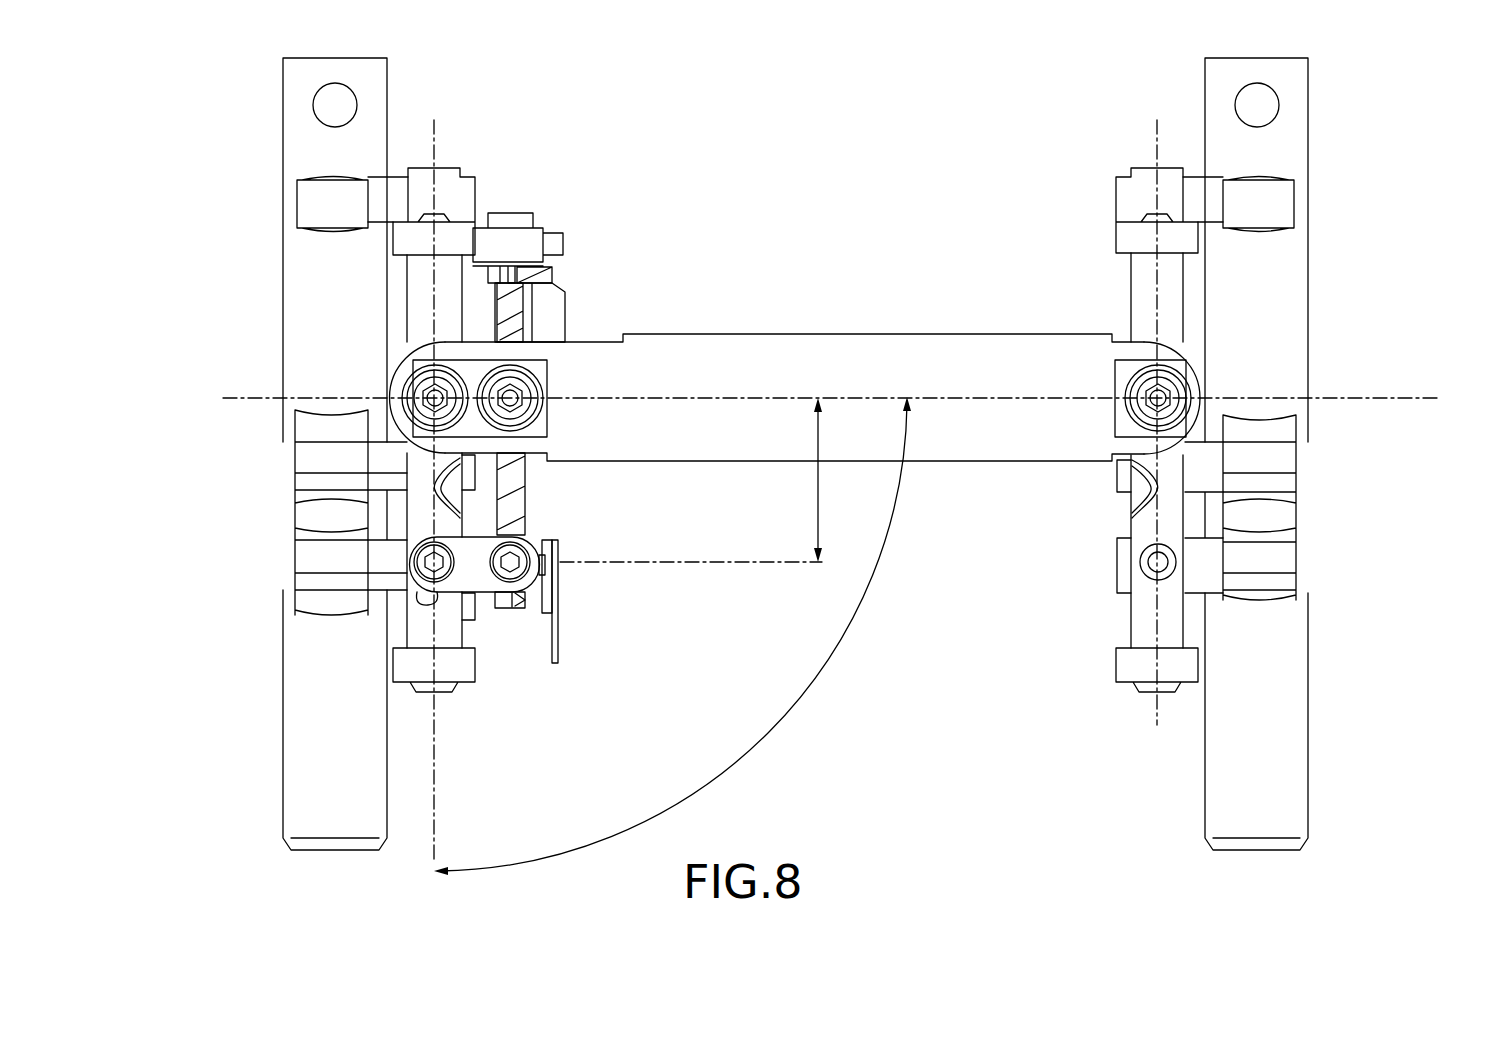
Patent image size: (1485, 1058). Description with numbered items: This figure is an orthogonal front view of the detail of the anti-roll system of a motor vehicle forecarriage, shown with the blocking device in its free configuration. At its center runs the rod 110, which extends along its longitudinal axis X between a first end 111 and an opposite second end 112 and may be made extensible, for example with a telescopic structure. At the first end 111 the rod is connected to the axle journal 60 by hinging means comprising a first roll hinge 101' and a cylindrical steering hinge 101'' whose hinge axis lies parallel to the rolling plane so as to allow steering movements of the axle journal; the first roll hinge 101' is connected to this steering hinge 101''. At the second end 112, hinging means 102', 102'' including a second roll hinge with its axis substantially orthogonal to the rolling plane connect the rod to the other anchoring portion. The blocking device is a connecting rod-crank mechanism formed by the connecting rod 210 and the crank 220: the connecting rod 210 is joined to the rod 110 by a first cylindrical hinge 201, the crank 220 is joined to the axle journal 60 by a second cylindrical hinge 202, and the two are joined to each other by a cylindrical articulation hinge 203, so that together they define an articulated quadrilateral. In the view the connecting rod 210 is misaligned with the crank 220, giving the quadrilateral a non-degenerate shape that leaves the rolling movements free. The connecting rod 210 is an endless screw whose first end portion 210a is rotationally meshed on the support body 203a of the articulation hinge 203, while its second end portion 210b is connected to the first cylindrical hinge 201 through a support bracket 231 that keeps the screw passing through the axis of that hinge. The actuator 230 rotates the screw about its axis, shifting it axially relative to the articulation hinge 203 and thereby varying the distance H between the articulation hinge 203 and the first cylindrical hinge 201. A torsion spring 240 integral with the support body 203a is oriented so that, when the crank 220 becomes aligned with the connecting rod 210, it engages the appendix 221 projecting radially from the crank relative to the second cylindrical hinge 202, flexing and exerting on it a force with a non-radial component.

The axle journal 60 is at (298, 640).
The first roll hinge 101' is at (364, 351).
The cylindrical steering hinge 101'' is at (302, 490).
The second roll hinge 102' is at (1283, 440).
The hinging means at second end 102'' is at (1290, 422).
The rod 110 is at (1003, 334).
The first end of rod 111 is at (359, 385).
The second end of rod 112 is at (1196, 358).
The first cylindrical hinge 201 is at (545, 393).
The second cylindrical hinge 202 is at (412, 580).
The cylindrical articulation hinge 203 is at (505, 608).
The support body 203a is at (557, 533).
The connecting rod 210 is at (513, 490).
The first end portion of endless screw 210a is at (524, 594).
The second end portion of endless screw 210b is at (507, 305).
The crank 220 is at (490, 593).
The appendix 221 is at (427, 603).
The actuator 230 is at (517, 243).
The support bracket 231 is at (550, 322).
The torsion spring 240 is at (558, 658).
The distance H is at (691, 480).
The longitudinal axis X is at (223, 402).